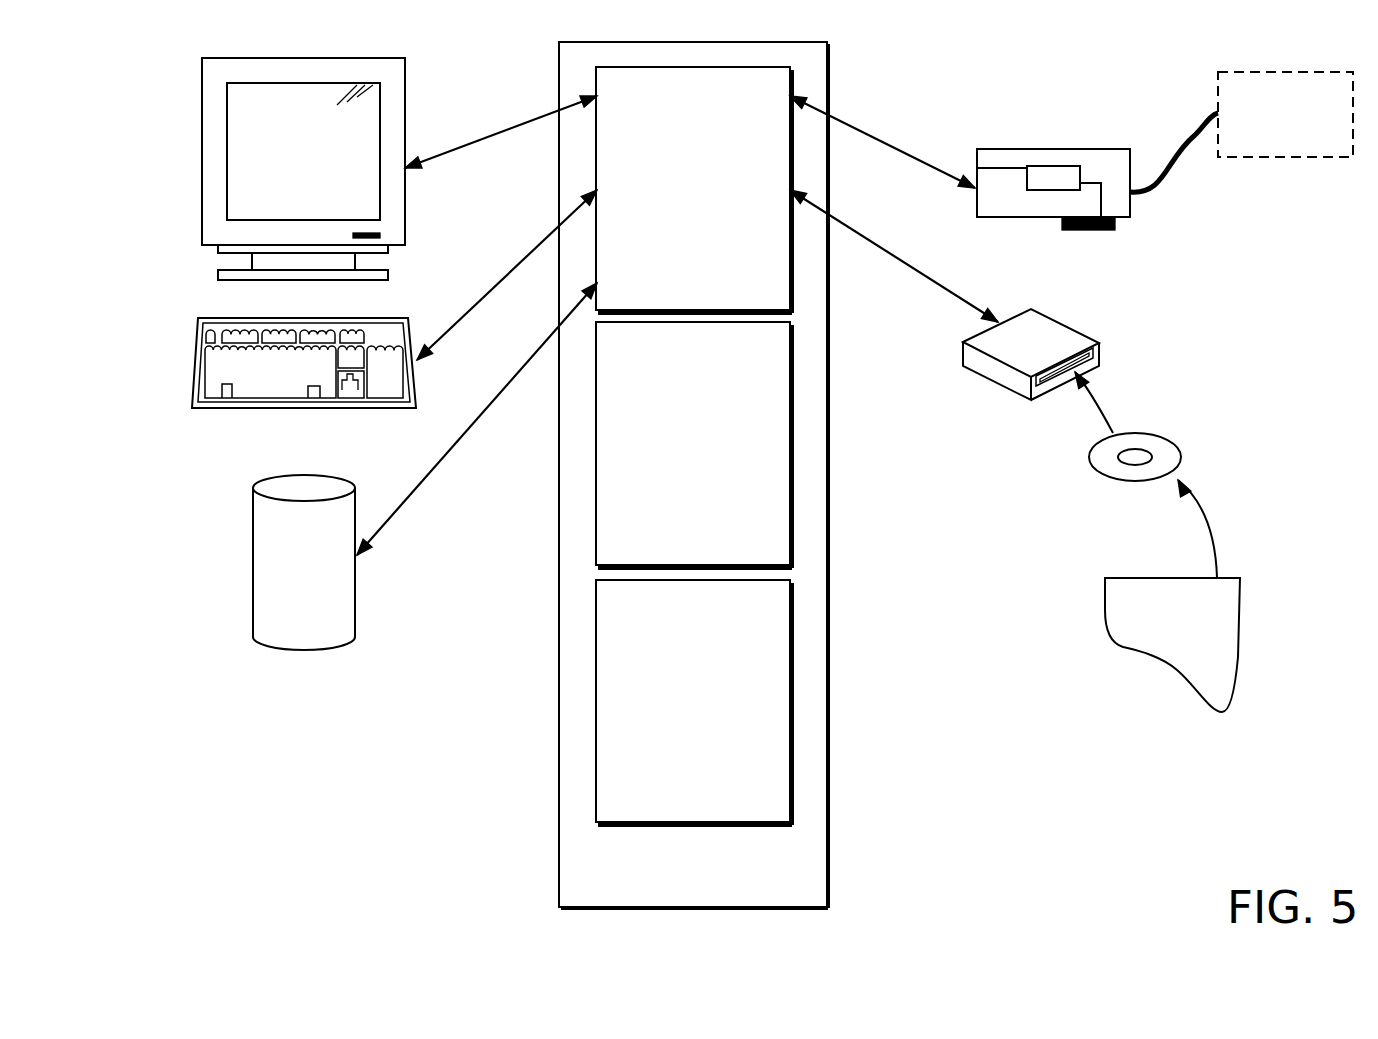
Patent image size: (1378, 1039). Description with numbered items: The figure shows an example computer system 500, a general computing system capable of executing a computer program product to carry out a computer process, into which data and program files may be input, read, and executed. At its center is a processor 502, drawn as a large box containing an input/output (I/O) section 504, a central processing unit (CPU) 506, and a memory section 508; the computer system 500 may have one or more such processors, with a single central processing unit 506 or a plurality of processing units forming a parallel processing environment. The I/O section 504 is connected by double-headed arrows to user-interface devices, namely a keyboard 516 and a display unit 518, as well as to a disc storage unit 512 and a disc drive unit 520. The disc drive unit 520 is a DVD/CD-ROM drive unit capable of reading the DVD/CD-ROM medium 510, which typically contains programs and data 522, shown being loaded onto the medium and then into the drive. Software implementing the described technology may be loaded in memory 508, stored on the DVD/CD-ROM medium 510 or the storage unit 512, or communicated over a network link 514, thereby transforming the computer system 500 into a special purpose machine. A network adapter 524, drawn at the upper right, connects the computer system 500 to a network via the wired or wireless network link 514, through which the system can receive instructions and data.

The computer system 500 is at (428, 795).
The processor 502 is at (675, 884).
The input/output (I/O) section 504 is at (675, 211).
The central processing unit (CPU) 506 is at (675, 467).
The memory section 508 is at (675, 724).
The DVD/CD-ROM medium 510 is at (1176, 441).
The disc storage unit 512 is at (252, 562).
The network link 514 is at (1160, 188).
The keyboard 516 is at (196, 362).
The display unit 518 is at (200, 170).
The disc drive unit 520 is at (1053, 322).
The programs and data 522 is at (1105, 594).
The network adapter 524 is at (1020, 148).